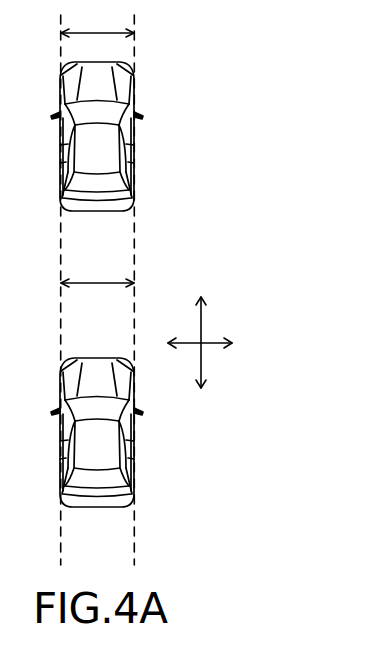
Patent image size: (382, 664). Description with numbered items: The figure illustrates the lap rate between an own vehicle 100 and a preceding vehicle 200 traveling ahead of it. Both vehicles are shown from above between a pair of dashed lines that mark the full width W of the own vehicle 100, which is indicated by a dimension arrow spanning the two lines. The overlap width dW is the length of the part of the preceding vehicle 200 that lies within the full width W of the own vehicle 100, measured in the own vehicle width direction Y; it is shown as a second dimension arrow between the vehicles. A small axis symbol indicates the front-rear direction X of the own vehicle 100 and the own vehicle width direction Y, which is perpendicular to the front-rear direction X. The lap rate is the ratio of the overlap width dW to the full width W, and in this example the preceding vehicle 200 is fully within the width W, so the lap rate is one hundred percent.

The own vehicle 100 is at (135, 445).
The preceding vehicle 200 is at (135, 150).
The full width W is at (97, 22).
The overlap width dW is at (112, 283).
The front-rear direction X is at (201, 330).
The own vehicle width direction Y is at (208, 345).